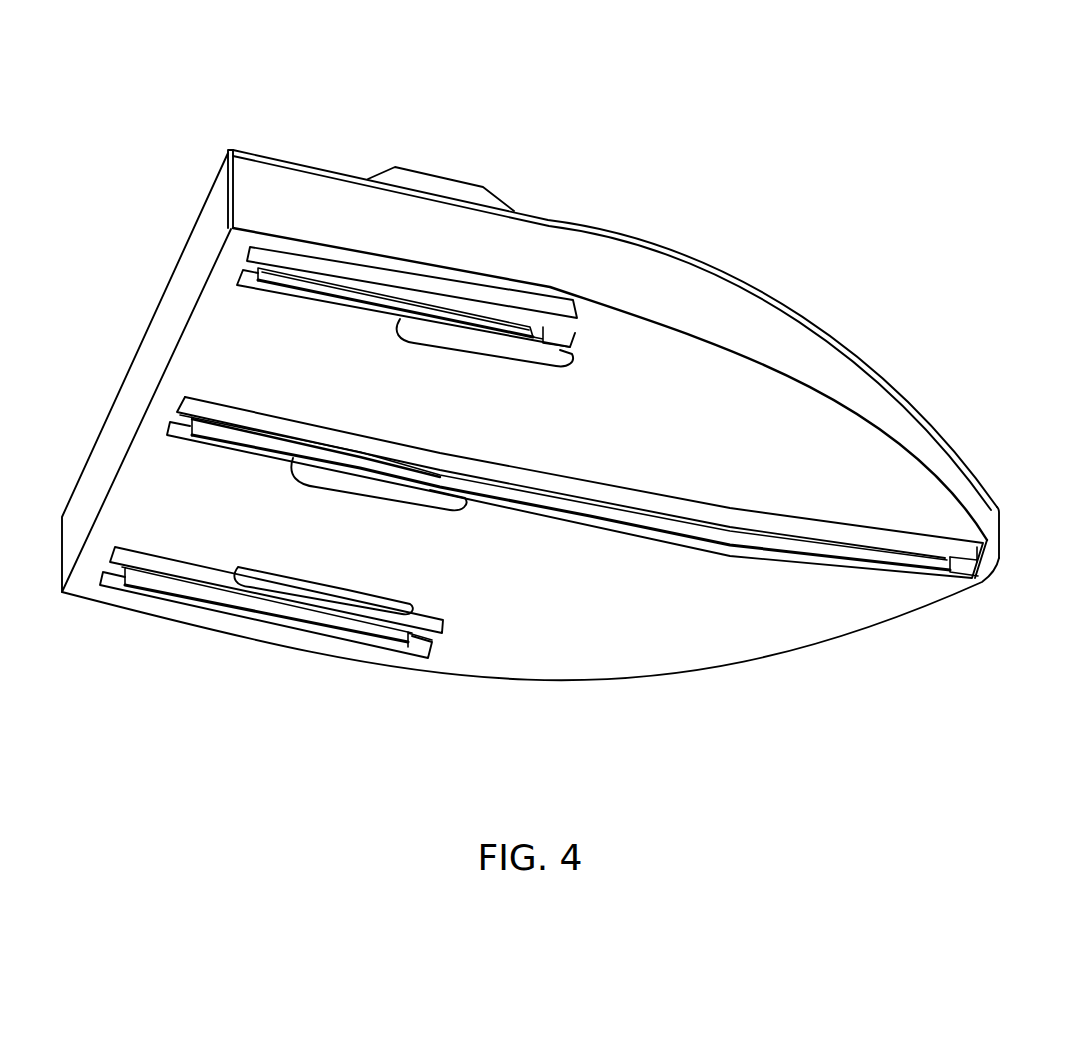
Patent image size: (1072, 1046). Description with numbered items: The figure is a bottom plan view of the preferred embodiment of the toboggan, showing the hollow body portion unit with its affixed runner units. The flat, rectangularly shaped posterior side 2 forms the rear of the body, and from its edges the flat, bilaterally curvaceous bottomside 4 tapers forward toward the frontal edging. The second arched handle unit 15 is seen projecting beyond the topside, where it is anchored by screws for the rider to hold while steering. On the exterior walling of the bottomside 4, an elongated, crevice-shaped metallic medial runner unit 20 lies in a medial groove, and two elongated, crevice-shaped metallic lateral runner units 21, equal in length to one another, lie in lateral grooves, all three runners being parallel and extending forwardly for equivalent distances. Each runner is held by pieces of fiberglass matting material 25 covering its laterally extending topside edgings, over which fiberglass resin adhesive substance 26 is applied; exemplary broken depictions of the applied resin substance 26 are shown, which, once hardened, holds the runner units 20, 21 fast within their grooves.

The posterior side 2 is at (128, 393).
The bottomside 4 is at (713, 605).
The second arched handle unit 15 is at (443, 178).
The medial runner unit 20 is at (902, 555).
The lateral runner units 21 is at (528, 338).
The fiberglass matting material 25 is at (250, 257).
The fiberglass resin adhesive substance 26 is at (540, 360).